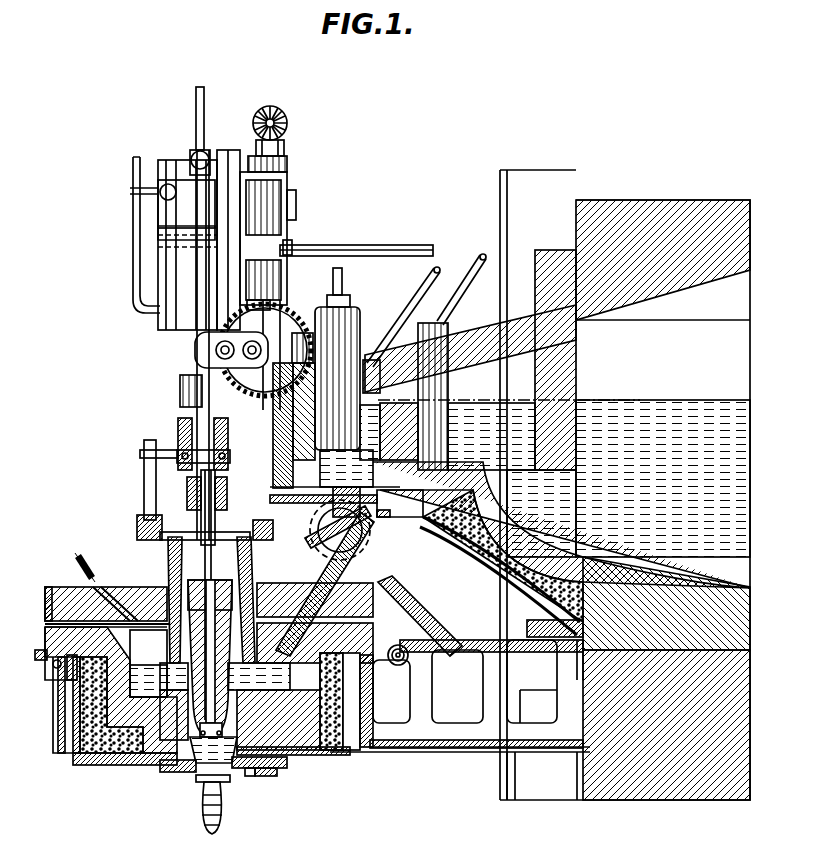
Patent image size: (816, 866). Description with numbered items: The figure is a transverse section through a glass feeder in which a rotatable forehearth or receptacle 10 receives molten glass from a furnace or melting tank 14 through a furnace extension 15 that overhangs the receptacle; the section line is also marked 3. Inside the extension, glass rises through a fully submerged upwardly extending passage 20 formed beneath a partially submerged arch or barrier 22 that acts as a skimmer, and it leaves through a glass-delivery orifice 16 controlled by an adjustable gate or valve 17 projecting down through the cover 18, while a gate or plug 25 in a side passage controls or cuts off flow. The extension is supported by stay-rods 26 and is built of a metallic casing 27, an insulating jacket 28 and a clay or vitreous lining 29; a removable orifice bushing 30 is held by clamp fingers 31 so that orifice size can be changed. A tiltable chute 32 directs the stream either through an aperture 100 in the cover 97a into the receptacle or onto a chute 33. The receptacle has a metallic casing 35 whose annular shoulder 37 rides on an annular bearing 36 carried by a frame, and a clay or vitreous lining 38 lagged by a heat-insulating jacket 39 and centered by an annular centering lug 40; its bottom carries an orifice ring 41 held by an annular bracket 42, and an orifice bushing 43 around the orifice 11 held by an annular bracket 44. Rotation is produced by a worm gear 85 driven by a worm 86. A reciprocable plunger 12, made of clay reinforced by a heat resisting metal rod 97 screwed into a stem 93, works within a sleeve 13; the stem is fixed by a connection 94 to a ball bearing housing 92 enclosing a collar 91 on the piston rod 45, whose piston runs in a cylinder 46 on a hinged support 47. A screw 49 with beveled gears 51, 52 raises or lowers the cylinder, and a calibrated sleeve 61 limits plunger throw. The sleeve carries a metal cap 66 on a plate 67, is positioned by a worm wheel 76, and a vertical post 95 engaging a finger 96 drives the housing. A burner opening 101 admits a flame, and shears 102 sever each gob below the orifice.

The section line 3 is at (440, 417).
The rotatable forehearth or receptacle 10 is at (46, 637).
The orifice 11 is at (205, 781).
The reciprocable plunger 12 is at (188, 592).
The sleeve 13 is at (170, 558).
The furnace or melting tank 14 is at (599, 485).
The furnace extension 15 is at (400, 518).
The glass-delivery orifice 16 is at (300, 503).
The adjustable gate or valve 17 is at (355, 326).
The cover 18 is at (462, 340).
The upwardly extending passage 20 is at (500, 586).
The arch or barrier 22 is at (583, 403).
The gate or plug 25 is at (450, 385).
The stay-rods 26 is at (476, 277).
The metallic casing 27 is at (475, 578).
The insulating jacket 28 is at (527, 629).
The clay or vitreous lining 29 is at (455, 548).
The removable orifice bushing 30 is at (332, 503).
The clamp fingers 31 is at (318, 512).
The tiltable chute 32 is at (315, 575).
The chute 33 is at (437, 652).
The metallic casing 35 is at (330, 760).
The annular bearing 36 is at (53, 736).
The annular shoulder 37 is at (50, 668).
The block 38 is at (60, 685).
The heat-insulating jacket 39 is at (98, 767).
The annular centering lug 40 is at (145, 770).
The orifice ring 41 is at (258, 778).
The annular bracket 42 is at (270, 776).
The orifice bushing 43 is at (226, 790).
The annular bracket 44 is at (185, 775).
The piston rod 45 is at (183, 390).
The cylinder 46 is at (158, 322).
The hinged support 47 is at (270, 196).
The screw 49 is at (290, 162).
The beveled gear 51 is at (287, 147).
The beveled gear 52 is at (283, 115).
The adjustable calibrated sleeve 61 is at (212, 156).
The metal cap 66 is at (268, 522).
The plate 67 is at (140, 532).
The worm wheel 76 is at (253, 355).
The worm gear 85 is at (36, 656).
The worm 86 is at (398, 668).
The collar 91 is at (180, 440).
The ball bearing housing 92 is at (217, 444).
The stem 93 is at (200, 522).
The connection 94 is at (196, 489).
The vertical post 95 is at (144, 479).
The horizontally extending finger 96 is at (140, 455).
The heat resisting metal rod 97 is at (180, 640).
The cover 97a is at (62, 593).
The aperture 100 is at (318, 543).
The burner opening 101 is at (100, 583).
The shears 102 is at (210, 784).